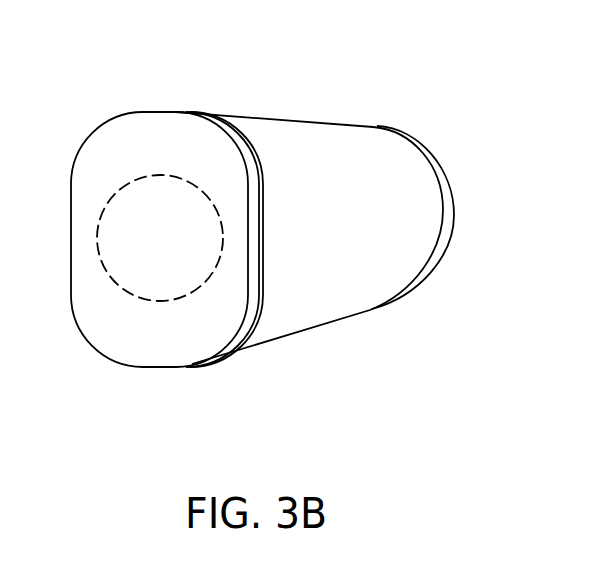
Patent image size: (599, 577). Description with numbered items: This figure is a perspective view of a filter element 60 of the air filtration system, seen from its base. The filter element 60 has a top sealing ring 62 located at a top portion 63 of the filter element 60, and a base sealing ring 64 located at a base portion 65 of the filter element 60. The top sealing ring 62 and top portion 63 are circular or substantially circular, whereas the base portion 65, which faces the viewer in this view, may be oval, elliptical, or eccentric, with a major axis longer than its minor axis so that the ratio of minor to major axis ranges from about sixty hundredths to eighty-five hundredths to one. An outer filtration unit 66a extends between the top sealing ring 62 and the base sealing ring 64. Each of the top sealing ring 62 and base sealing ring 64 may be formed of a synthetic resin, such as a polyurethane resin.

The filter element 60 is at (132, 82).
The top sealing ring 62 is at (447, 257).
The top portion 63 is at (442, 152).
The base sealing ring 64 is at (259, 261).
The base portion 65 is at (100, 362).
The outer filtration unit 66a is at (303, 234).